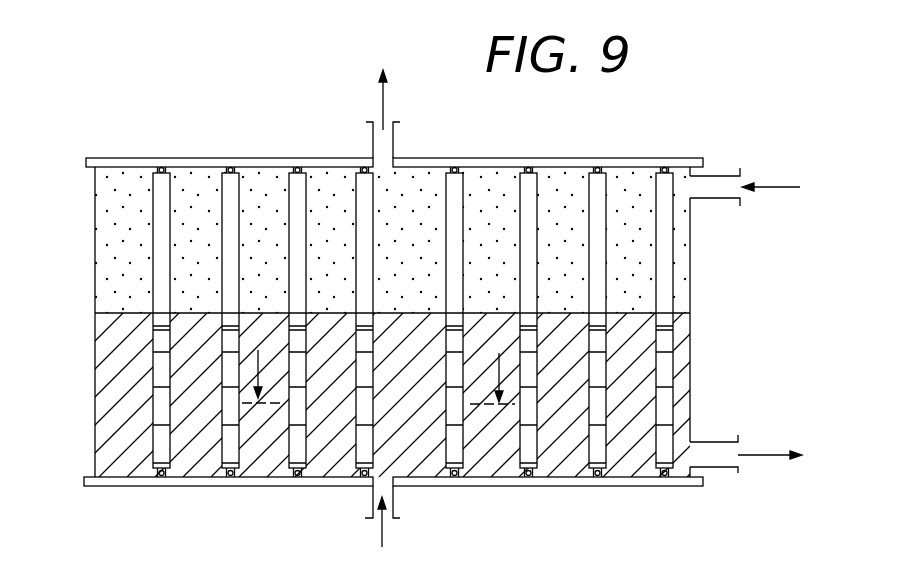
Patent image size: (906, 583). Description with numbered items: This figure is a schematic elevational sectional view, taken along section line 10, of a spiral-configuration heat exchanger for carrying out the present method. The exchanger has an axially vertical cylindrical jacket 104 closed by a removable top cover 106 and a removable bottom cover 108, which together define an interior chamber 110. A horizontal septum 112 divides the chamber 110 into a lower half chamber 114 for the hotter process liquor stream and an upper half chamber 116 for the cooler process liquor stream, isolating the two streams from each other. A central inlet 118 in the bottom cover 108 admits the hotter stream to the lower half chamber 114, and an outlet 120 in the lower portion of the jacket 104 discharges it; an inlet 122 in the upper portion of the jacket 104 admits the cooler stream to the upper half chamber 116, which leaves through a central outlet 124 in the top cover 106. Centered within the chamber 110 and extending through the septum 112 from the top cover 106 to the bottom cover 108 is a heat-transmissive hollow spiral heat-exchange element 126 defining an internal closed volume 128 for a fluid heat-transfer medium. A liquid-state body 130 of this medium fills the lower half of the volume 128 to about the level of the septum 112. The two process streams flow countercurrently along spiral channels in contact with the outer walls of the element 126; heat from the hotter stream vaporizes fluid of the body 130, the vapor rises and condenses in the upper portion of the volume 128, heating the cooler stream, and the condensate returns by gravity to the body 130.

The section line 10- 10 is at (378, 377).
The cylindrical jacket 104 is at (96, 388).
The top cover 106 is at (627, 165).
The bottom cover 108 is at (585, 488).
The interior chamber 110 is at (107, 234).
The horizontal septum 112 is at (112, 310).
The lower half chamber 114 is at (196, 462).
The upper half chamber 116 is at (265, 176).
The central inlet 118 is at (393, 510).
The outlet 120 is at (710, 441).
The inlet 122 is at (706, 200).
The central outlet 124 is at (394, 138).
The hollow spiral heat-exchange element 126 is at (612, 363).
The internal closed volume 128 is at (527, 190).
The liquid-state body of heat-transfer medium 130 is at (150, 452).